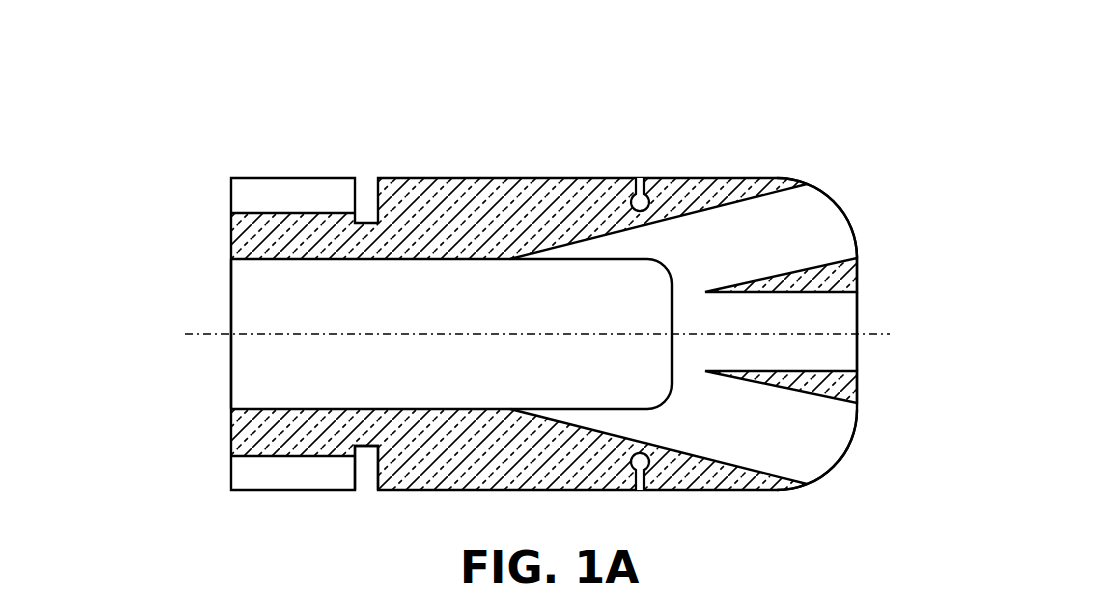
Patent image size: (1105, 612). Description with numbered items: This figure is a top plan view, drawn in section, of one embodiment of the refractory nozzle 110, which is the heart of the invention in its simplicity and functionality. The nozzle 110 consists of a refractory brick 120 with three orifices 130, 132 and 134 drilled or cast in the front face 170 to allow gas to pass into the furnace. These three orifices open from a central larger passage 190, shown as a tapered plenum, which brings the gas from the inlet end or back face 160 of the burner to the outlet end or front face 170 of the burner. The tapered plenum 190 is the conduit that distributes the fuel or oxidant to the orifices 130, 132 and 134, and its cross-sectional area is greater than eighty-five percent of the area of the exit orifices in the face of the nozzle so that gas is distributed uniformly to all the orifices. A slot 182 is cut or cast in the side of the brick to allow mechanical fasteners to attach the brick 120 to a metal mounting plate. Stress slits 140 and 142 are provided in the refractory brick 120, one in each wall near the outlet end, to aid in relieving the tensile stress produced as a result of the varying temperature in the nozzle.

The nozzle 110 is at (611, 303).
The refractory brick 120 is at (766, 190).
The orifice 130 is at (837, 230).
The orifice 132 is at (843, 315).
The orifice 134 is at (827, 450).
The stress slit 140 is at (638, 176).
The stress slit 142 is at (642, 490).
The inlet end (back face) 160 is at (224, 374).
The outlet end (front face) 170 is at (882, 364).
The slot 182 is at (365, 478).
The central passage (tapered plenum) 190 is at (620, 382).